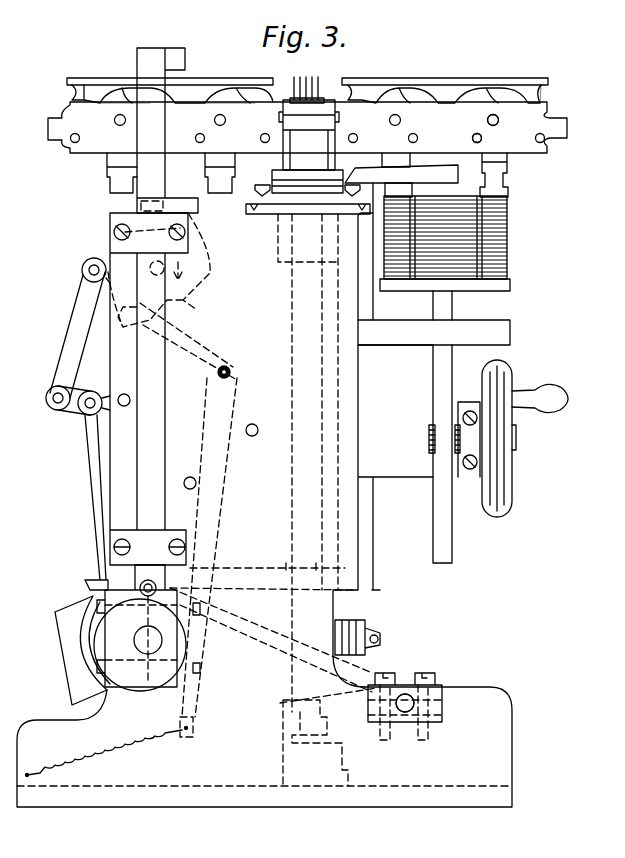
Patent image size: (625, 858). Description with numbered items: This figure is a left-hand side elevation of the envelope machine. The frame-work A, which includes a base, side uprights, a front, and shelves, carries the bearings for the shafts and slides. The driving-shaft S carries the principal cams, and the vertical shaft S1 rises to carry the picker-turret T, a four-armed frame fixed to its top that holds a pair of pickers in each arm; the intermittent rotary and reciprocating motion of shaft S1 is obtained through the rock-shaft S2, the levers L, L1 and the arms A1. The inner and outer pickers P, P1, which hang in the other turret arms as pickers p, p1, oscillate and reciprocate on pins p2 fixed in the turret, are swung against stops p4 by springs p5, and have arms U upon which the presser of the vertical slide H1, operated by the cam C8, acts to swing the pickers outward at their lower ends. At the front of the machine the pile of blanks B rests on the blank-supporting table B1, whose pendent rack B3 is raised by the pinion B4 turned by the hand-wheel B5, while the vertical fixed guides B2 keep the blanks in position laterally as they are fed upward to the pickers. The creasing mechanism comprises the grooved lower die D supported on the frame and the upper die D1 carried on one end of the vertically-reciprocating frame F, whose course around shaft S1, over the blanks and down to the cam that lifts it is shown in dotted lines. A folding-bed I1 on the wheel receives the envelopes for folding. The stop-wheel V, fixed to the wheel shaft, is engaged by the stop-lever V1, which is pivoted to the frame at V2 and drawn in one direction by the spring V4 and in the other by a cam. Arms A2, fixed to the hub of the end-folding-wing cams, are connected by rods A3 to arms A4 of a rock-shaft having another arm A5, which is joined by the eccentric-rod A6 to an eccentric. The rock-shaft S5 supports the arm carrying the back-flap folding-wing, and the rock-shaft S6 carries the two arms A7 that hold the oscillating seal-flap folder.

The picker-turret T is at (307, 127).
The picker arms U is at (176, 86).
The inner picker p is at (297, 94).
The outer picker p1 is at (306, 94).
The picker pins p2 is at (499, 120).
The picker stops p4 is at (482, 138).
The picker springs p5 is at (548, 100).
The inner picker P is at (318, 78).
The outer picker P1 is at (309, 135).
The upper die D1 is at (264, 190).
The lower die D is at (265, 216).
The folding-bed I1 is at (182, 178).
The vertical slide H1 is at (149, 389).
The stop-wheel V is at (172, 296).
The stop-lever V1 is at (233, 392).
The stop-lever pivot V2 is at (228, 366).
The stop-lever spring V4 is at (140, 748).
The frame-work A is at (228, 802).
The arms A1 is at (381, 640).
The cam-hub arms A2 is at (90, 258).
The connecting rods A3 is at (72, 350).
The rock-shaft arms A4 is at (54, 418).
The rock-shaft arm A5 is at (108, 412).
The eccentric-rod A6 is at (98, 506).
The seal-flap folder arms A7 is at (90, 620).
The slide cam C8 is at (147, 628).
The driving-shaft S is at (148, 640).
The vertical shaft S1 is at (285, 690).
The rock-shaft S2 is at (408, 724).
The back-flap rock-shaft S5 is at (259, 430).
The seal-flap rock-shaft S6 is at (197, 484).
The vertically-reciprocating frame F is at (252, 565).
The pile of blanks B is at (502, 232).
The blank-supporting table B1 is at (512, 284).
The vertical fixed guides B2 is at (478, 228).
The pendent rack B3 is at (458, 323).
The pinion B4 is at (430, 435).
The hand-wheel B5 is at (512, 490).
The lever L is at (330, 722).
The lever L1 is at (395, 666).